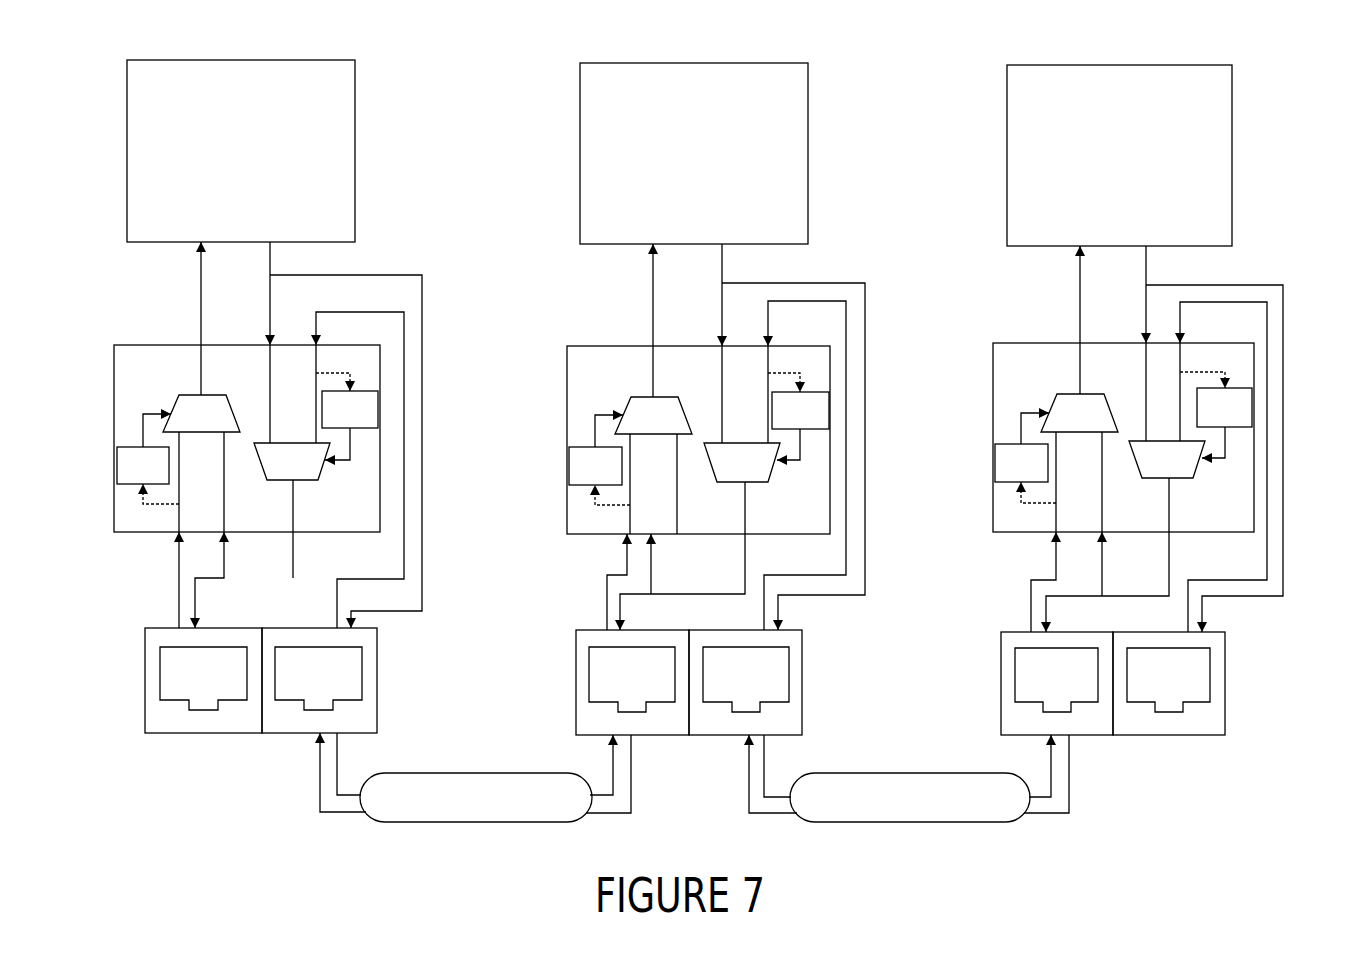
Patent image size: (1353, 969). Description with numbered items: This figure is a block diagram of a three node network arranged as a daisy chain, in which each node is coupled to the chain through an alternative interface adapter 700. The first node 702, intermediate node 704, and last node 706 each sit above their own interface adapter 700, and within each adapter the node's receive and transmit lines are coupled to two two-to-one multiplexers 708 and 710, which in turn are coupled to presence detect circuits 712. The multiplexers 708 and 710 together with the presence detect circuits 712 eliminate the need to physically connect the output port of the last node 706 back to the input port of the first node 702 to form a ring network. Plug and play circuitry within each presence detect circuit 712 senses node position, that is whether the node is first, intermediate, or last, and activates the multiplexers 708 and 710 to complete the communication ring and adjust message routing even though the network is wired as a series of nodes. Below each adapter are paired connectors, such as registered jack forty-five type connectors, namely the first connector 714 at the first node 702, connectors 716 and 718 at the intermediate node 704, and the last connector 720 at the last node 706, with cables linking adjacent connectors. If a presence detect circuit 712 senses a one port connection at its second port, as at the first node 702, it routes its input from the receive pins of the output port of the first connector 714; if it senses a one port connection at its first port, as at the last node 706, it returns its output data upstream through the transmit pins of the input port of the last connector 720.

The interface adapter 700 is at (133, 345).
The first node 702 is at (358, 146).
The intermediate node 704 is at (810, 148).
The last node 706 is at (1236, 149).
The 2-to-1 multiplexer 708 is at (215, 395).
The 2-to-1 multiplexer 710 is at (303, 482).
The presence detect circuit 712 is at (116, 468).
The first connector 714 is at (277, 736).
The connector 716 is at (655, 738).
The connector 718 is at (706, 738).
The last connector 720 is at (1088, 738).